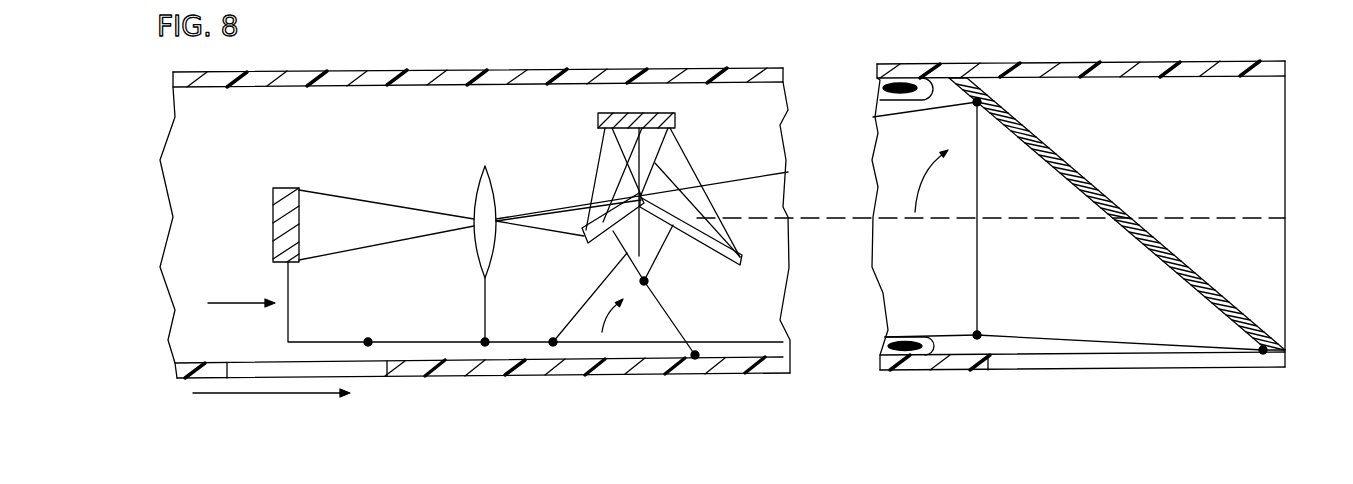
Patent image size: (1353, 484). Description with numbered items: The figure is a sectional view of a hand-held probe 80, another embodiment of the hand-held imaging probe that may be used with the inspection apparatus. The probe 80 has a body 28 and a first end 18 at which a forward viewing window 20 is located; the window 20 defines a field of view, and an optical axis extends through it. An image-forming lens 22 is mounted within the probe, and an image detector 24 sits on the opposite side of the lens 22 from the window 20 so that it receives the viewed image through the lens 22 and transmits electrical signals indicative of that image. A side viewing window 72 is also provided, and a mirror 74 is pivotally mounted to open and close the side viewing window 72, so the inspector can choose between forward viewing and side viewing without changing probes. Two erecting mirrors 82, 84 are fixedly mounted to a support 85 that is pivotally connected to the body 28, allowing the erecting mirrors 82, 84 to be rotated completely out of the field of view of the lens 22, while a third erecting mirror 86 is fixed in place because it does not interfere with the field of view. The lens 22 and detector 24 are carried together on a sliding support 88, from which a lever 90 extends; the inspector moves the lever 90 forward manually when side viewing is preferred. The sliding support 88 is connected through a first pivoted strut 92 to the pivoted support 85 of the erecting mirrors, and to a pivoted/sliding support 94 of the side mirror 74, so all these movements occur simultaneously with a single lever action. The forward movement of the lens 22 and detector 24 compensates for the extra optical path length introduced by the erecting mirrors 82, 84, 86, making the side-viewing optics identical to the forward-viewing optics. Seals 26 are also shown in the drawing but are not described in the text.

The first end 18 is at (1205, 62).
The viewing window 20 is at (1265, 77).
The image-forming lens 22 is at (471, 182).
The image detector 24 is at (288, 187).
The seal 26 is at (920, 78).
The body 28 is at (440, 70).
The side viewing window 72 is at (1247, 353).
The mirror 74 is at (1088, 178).
The hand-held probe 80 is at (538, 58).
The erecting mirror 82 is at (588, 250).
The erecting mirror 84 is at (697, 243).
The support 85 is at (673, 323).
The third erecting mirror 86 is at (632, 113).
The sliding support 88 is at (517, 343).
The lever 90 is at (368, 346).
The first pivoted strut 92 is at (567, 325).
The pivoted/sliding support 94 is at (977, 265).